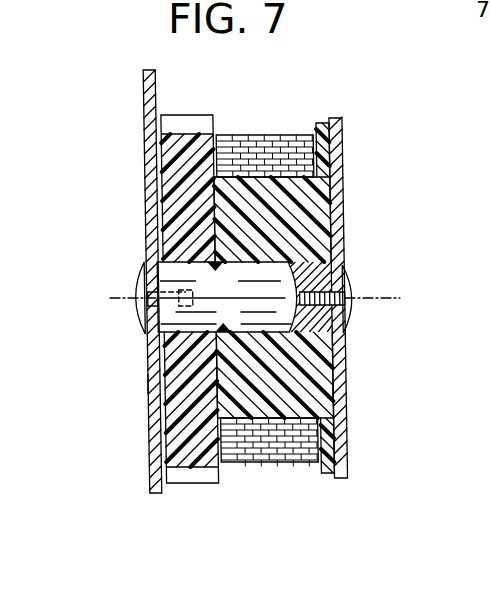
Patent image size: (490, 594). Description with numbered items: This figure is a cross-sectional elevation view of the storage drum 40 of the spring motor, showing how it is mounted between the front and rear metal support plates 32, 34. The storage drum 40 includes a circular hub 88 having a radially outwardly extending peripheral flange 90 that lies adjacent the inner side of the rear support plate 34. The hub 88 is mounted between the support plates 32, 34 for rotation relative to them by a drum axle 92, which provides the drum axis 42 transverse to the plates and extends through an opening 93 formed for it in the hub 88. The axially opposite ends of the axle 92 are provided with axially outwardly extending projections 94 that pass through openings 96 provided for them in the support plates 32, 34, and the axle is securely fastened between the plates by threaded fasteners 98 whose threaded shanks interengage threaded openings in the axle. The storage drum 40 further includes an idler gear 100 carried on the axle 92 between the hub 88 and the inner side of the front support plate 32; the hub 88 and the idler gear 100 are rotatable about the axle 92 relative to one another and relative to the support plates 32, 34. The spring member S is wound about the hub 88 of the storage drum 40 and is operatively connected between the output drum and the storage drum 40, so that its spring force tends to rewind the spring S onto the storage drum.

The front support plate 32 is at (148, 116).
The rear support plate 34 is at (335, 160).
The storage drum 40 is at (333, 392).
The drum axis 42 is at (392, 296).
The circular hub 88 is at (303, 228).
The peripheral flange 90 is at (323, 451).
The drum axle 92 is at (207, 275).
The opening 93 is at (148, 384).
The projections 94 is at (145, 318).
The openings 96 is at (133, 281).
The threaded fasteners 98 is at (145, 303).
The idler gear 100 is at (193, 478).
The spring member S is at (275, 463).